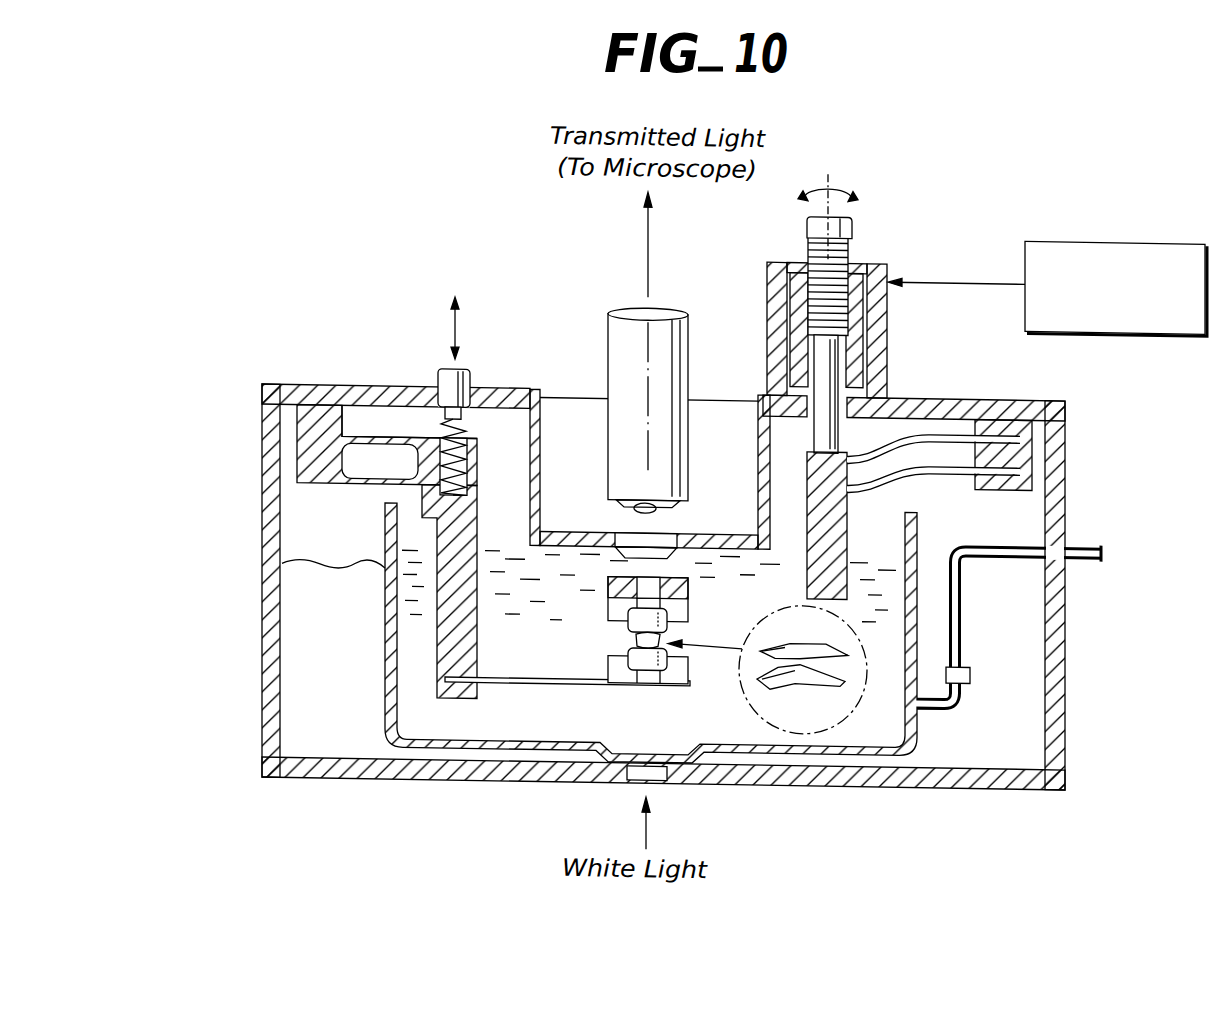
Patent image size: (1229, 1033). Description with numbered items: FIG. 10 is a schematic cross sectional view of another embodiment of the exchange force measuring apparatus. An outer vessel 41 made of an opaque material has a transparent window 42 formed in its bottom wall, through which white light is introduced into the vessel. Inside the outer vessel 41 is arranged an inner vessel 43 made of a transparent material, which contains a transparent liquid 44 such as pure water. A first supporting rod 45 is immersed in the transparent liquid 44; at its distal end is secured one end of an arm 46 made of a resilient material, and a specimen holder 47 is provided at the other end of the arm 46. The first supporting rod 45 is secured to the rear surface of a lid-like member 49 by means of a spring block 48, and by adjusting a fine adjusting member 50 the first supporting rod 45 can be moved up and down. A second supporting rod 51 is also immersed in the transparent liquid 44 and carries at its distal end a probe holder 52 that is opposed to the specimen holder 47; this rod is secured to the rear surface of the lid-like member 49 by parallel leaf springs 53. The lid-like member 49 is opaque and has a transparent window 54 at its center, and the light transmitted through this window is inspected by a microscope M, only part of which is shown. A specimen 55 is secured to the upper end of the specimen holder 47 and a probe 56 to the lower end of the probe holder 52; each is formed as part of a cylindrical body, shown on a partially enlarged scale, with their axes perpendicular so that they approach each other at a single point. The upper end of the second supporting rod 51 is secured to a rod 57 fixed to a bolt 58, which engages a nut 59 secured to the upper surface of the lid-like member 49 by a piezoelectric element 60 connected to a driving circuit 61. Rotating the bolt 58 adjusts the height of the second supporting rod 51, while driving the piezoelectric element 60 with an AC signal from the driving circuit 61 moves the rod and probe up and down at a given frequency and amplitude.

The outer vessel 41 is at (990, 766).
The transparent window 42 is at (650, 773).
The inner vessel 43 is at (388, 625).
The transparent liquid 44 is at (410, 677).
The first supporting rod 45 is at (440, 565).
The arm 46 is at (508, 672).
The specimen holder 47 is at (620, 668).
The spring block 48 is at (356, 431).
The lid-like member 49 is at (374, 426).
The fine adjusting member 50 is at (440, 370).
The second supporting rod 51 is at (847, 499).
The probe holder 52 is at (742, 641).
The parallel leaf springs 53 is at (915, 462).
The transparent window 54 is at (634, 536).
The specimen 55 is at (688, 596).
The probe 56 is at (622, 636).
The rod 57 is at (817, 354).
The bolt 58 is at (836, 250).
The nut 59 is at (862, 314).
The piezoelectric element 60 is at (770, 290).
The driving circuit 61 is at (1131, 322).
The microscope M is at (608, 316).